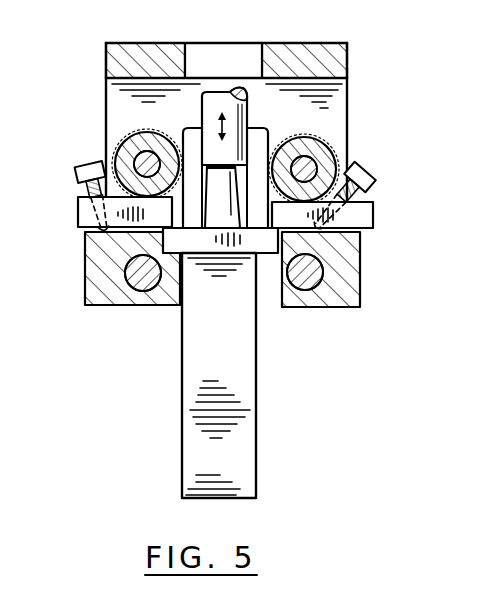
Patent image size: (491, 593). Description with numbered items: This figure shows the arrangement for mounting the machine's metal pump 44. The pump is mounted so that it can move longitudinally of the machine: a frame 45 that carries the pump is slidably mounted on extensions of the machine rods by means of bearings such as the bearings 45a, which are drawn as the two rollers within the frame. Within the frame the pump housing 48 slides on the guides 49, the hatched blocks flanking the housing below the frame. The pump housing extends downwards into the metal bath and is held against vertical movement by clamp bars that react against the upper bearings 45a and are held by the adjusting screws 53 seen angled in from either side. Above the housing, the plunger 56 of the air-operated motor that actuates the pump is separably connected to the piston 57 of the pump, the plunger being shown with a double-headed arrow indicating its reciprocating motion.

The metal pump 44 is at (176, 329).
The frame 45 is at (352, 80).
The bearings 45a is at (128, 144).
The pump housing 48 is at (245, 392).
The guides 49 is at (92, 272).
The adjusting screws 53 is at (77, 167).
The plunger 56 is at (238, 92).
The piston 57 is at (232, 195).